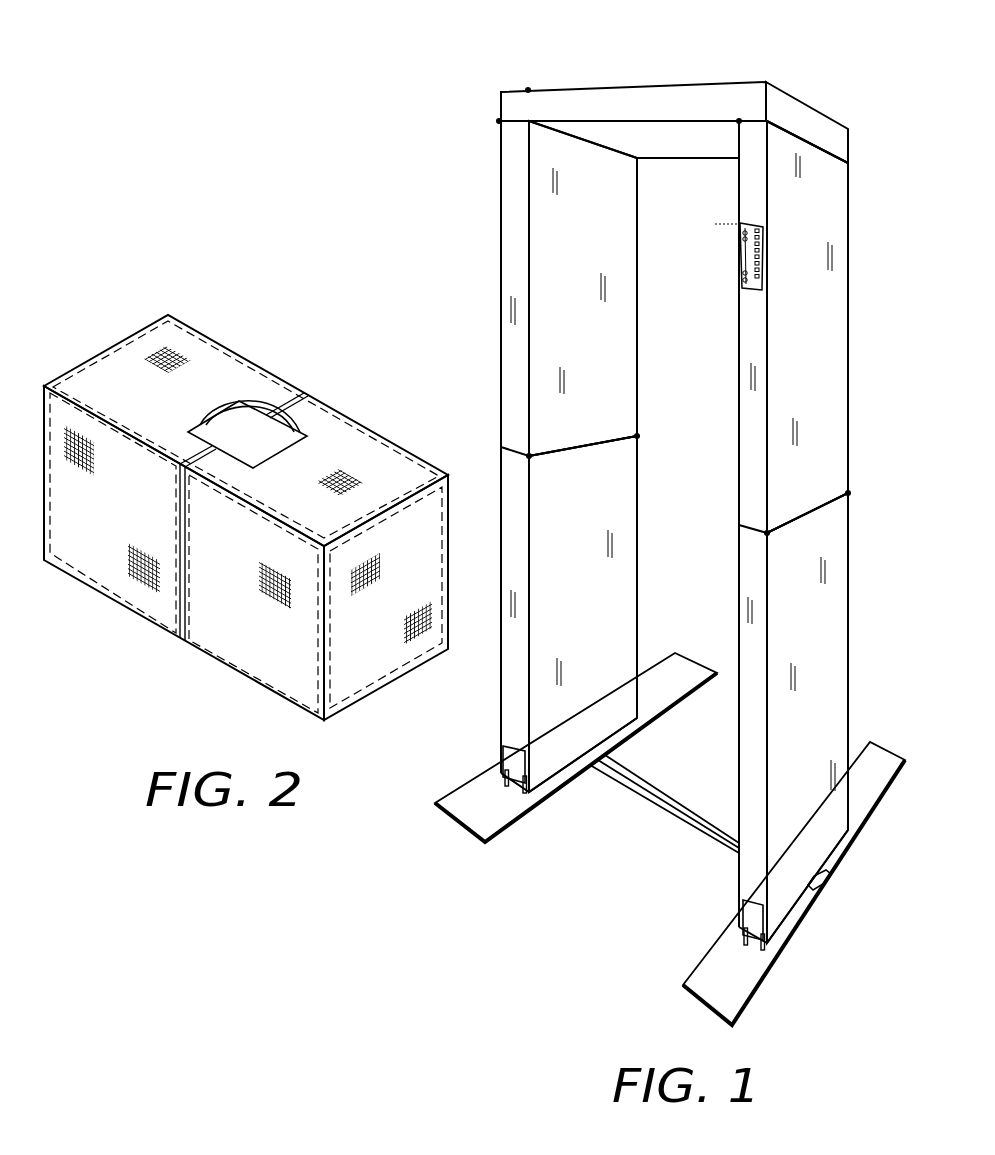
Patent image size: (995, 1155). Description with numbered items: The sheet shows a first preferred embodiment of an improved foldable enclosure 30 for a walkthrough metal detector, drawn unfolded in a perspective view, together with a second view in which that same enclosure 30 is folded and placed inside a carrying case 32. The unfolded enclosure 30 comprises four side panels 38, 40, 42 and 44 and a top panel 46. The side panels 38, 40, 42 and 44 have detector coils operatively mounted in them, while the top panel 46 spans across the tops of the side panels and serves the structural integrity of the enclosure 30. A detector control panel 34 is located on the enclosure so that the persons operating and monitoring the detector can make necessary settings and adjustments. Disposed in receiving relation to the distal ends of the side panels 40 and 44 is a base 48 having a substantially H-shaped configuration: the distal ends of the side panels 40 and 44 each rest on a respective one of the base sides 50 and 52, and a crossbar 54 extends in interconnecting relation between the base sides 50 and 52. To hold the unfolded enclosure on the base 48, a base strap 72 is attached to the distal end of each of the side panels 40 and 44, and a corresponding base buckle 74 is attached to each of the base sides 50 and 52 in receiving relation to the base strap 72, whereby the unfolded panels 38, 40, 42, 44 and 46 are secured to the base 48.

In FIG. 1, the foldable enclosure 30 is at (436, 160).
In FIG. 2, the carrying case 32 is at (105, 320).
In FIG. 1, the detector control panel 34 is at (764, 227).
In FIG. 1, the side panel 38 is at (853, 884).
In FIG. 1, the side panel 40 is at (574, 579).
In FIG. 1, the side panel 42 is at (793, 327).
In FIG. 1, the side panel 44 is at (798, 718).
In FIG. 1, the top panel 46 is at (633, 84).
In FIG. 1, the base 48 is at (456, 853).
In FIG. 1, the base side 50 is at (492, 824).
In FIG. 1, the base side 52 is at (735, 996).
In FIG. 1, the crossbar 54 is at (658, 800).
In FIG. 1, the base strap 72 is at (517, 756).
In FIG. 1, the base buckle 74 is at (507, 776).